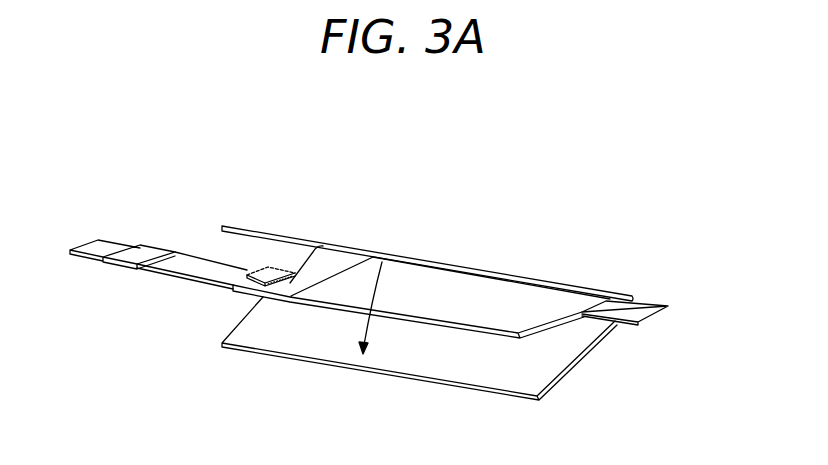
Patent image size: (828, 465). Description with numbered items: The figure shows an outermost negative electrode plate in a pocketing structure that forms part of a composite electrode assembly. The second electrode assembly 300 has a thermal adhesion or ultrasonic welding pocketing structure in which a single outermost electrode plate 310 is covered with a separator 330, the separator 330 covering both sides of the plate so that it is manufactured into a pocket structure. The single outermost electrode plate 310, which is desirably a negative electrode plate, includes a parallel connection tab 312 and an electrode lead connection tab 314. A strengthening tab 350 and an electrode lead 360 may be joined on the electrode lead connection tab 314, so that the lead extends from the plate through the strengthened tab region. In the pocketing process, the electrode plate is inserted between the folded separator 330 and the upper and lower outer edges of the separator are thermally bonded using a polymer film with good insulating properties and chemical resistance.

The second electrode assembly 300 is at (449, 210).
The single outermost electrode plate 310 is at (423, 307).
The parallel connection tab 312 is at (643, 308).
The electrode lead connection tab 314 is at (252, 294).
The separator 330 is at (521, 276).
The strengthening tab 350 is at (258, 268).
The electrode lead 360 is at (112, 247).